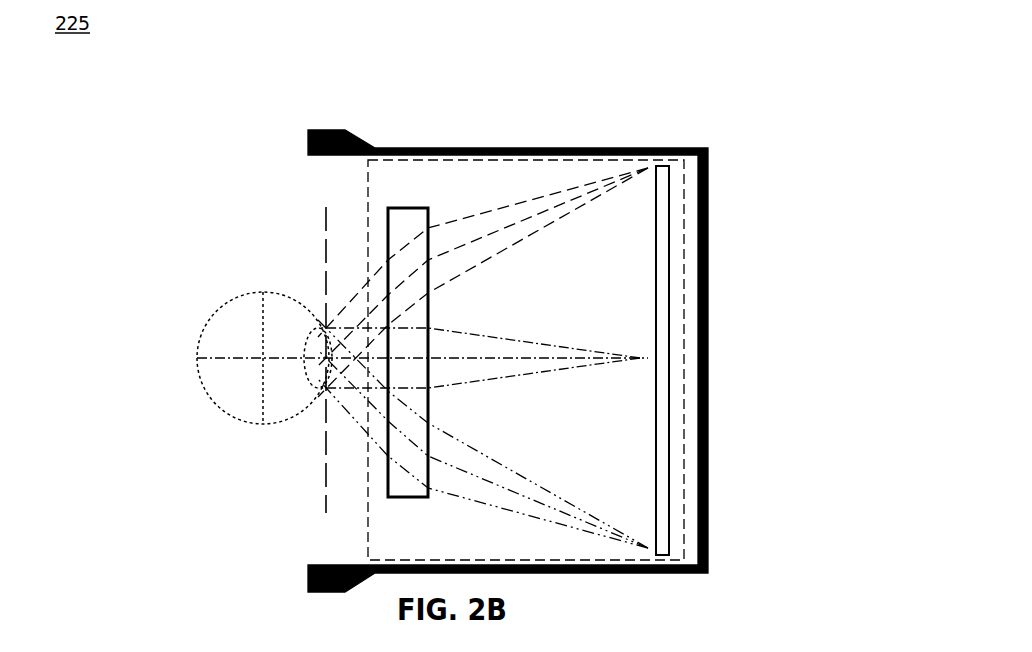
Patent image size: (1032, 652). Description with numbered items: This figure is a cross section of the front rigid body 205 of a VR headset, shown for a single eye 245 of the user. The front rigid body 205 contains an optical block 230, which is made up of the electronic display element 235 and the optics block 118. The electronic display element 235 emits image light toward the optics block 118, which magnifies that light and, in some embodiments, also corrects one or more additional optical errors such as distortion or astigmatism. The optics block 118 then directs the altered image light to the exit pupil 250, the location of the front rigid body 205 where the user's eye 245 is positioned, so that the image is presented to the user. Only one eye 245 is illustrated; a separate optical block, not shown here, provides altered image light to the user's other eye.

The front rigid body 205 is at (676, 146).
The optics block 118 is at (378, 215).
The electronic display element 235 is at (680, 271).
The eye 245 is at (220, 294).
The optical block 230 is at (358, 473).
The exit pupil 250 is at (310, 500).